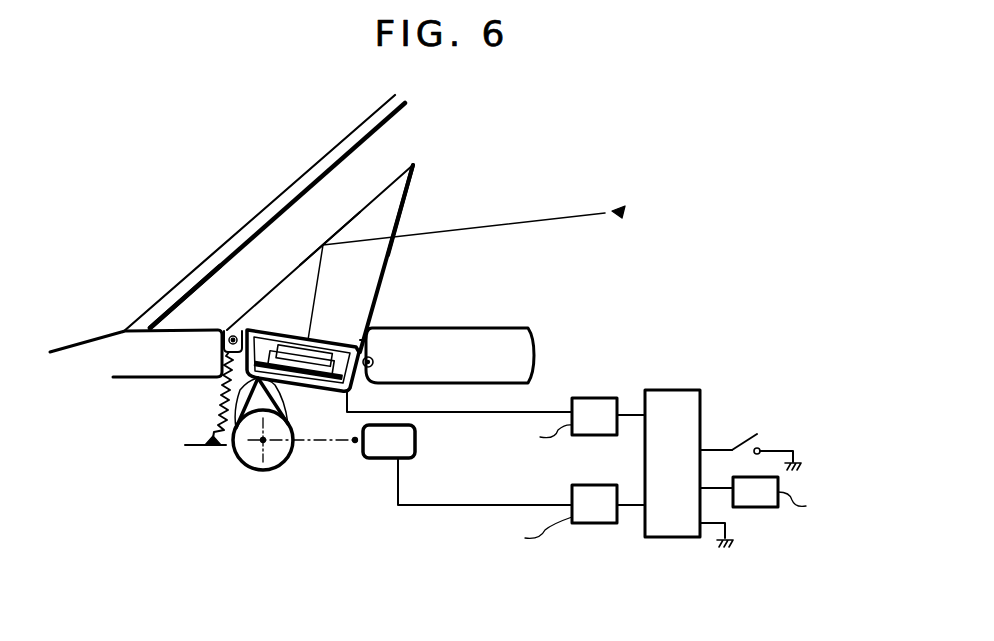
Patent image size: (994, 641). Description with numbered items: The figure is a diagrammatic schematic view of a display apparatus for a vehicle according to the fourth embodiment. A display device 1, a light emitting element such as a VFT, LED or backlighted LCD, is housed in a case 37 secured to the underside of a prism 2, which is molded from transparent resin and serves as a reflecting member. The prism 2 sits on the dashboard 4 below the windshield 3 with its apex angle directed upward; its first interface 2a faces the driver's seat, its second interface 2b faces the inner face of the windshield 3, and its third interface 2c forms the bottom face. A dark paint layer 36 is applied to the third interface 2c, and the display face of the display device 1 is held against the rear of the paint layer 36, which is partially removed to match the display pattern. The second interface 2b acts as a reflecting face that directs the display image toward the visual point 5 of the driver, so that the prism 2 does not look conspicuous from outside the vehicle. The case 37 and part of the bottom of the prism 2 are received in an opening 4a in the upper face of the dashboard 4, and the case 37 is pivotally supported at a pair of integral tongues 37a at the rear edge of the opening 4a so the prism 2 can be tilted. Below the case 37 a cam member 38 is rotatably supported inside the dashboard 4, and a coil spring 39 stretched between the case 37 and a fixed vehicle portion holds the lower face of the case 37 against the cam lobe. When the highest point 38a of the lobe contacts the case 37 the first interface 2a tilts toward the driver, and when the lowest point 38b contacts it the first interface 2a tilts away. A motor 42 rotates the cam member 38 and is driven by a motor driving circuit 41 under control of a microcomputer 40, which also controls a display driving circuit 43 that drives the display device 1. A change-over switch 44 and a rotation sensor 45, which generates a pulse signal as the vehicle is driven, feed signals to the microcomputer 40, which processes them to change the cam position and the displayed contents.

The display device 1 is at (333, 340).
The prism 2 is at (400, 170).
The first interface 2a is at (398, 218).
The second interface 2b is at (337, 215).
The third interface 2c is at (252, 330).
The windshield 3 is at (338, 146).
The dashboard 4 is at (503, 330).
The opening 4a is at (368, 330).
The visual point 5 is at (621, 214).
The paint layer 36 is at (213, 383).
The case 37 is at (298, 388).
The tongues 37a is at (383, 373).
The cam member 38 is at (280, 448).
The highest point 38a is at (233, 420).
The lowest point 38b is at (268, 470).
The coil spring 39 is at (210, 418).
The microcomputer (CPU) 40 is at (686, 395).
The motor driving circuit (MDC) 41 is at (595, 525).
The motor 42 is at (380, 460).
The display driving circuit (DDC) 43 is at (603, 398).
The change-over switch 44 is at (745, 433).
The rotation sensor (RS) 45 is at (765, 507).